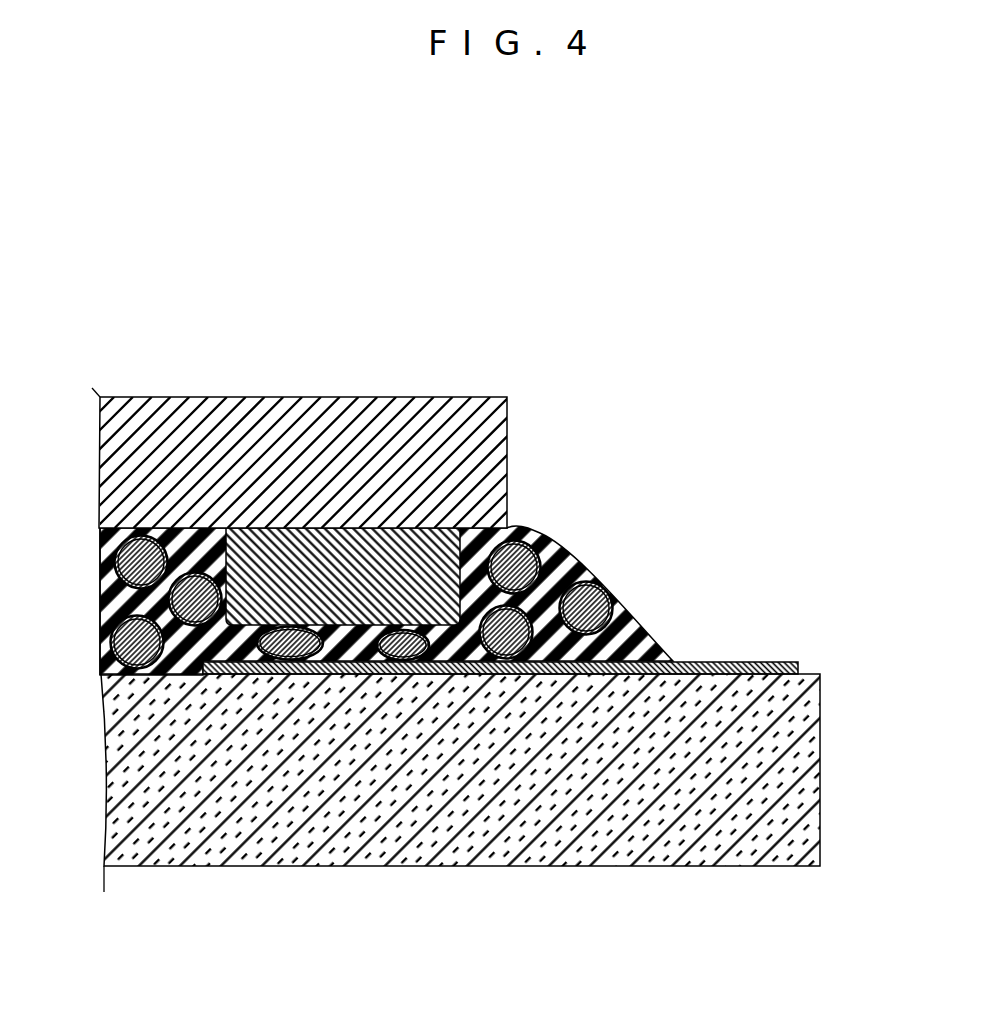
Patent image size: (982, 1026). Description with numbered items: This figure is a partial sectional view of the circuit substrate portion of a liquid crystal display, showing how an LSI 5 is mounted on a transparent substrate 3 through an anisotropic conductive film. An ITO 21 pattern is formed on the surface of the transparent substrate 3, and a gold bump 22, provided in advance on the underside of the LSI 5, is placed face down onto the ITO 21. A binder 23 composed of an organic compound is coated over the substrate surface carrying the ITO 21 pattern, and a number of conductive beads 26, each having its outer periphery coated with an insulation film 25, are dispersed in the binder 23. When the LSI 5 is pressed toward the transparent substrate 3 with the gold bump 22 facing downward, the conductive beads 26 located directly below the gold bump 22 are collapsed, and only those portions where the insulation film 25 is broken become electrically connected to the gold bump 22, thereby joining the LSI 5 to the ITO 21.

The transparent substrate 3 is at (820, 736).
The LSI 5 is at (508, 418).
The ITO 21 is at (800, 664).
The gold bump 22 is at (519, 535).
The binder 23 is at (586, 562).
The insulation film 25 is at (100, 572).
The conductive beads 26 is at (620, 603).